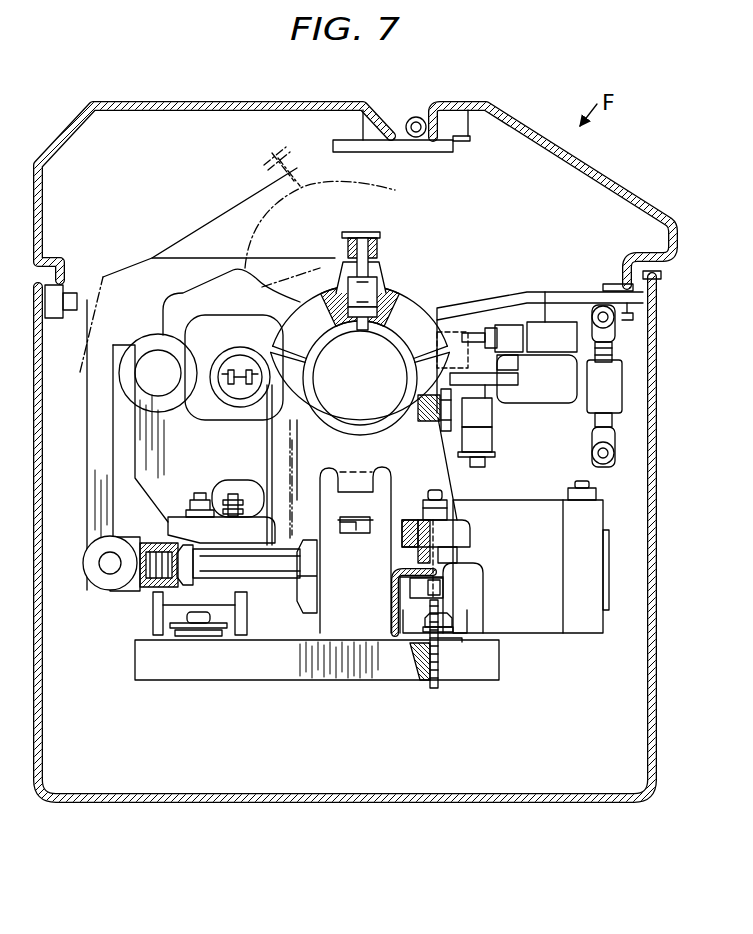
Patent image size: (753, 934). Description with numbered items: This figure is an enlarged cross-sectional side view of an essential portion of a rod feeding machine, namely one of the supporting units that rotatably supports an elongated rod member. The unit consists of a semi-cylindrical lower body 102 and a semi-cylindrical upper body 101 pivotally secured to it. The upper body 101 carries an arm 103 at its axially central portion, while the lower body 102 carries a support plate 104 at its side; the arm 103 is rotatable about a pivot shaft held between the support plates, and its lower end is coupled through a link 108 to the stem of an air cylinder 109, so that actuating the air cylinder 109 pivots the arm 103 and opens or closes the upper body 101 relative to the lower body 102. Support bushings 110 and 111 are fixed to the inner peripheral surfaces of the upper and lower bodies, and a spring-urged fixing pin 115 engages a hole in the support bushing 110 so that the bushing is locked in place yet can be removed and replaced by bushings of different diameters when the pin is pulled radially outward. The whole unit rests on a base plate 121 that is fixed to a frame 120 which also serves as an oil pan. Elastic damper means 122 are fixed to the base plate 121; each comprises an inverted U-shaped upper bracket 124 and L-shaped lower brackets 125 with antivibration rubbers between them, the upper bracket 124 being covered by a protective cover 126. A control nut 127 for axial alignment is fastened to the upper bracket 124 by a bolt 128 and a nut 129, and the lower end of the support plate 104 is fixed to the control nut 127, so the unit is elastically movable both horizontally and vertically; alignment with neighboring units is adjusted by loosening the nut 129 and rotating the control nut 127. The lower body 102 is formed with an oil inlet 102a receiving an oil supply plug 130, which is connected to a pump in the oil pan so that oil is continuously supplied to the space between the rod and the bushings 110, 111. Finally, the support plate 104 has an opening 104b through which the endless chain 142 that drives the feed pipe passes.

The upper body 101 is at (359, 345).
The lower body 102 is at (466, 462).
The oil inlet 102a is at (449, 398).
The arm 103 is at (162, 282).
The support plate 104 is at (123, 457).
The opening 104b is at (222, 492).
The link 108 is at (137, 583).
The air cylinder 109 is at (538, 622).
The support bushing 110 is at (398, 335).
The support bushing 111 is at (313, 410).
The fixing pin 115 is at (362, 268).
The frame 120 is at (486, 795).
The base plate 121 is at (273, 668).
The elastic damper means 122 is at (436, 576).
The upper bracket 124 is at (412, 588).
The lower bracket 125 is at (462, 636).
The protective cover 126 is at (393, 583).
The control nut 127 is at (447, 590).
The bolt 128 is at (440, 586).
The nut 129 is at (451, 508).
The oil supply plug 130 is at (483, 437).
The endless chain 142 is at (243, 490).